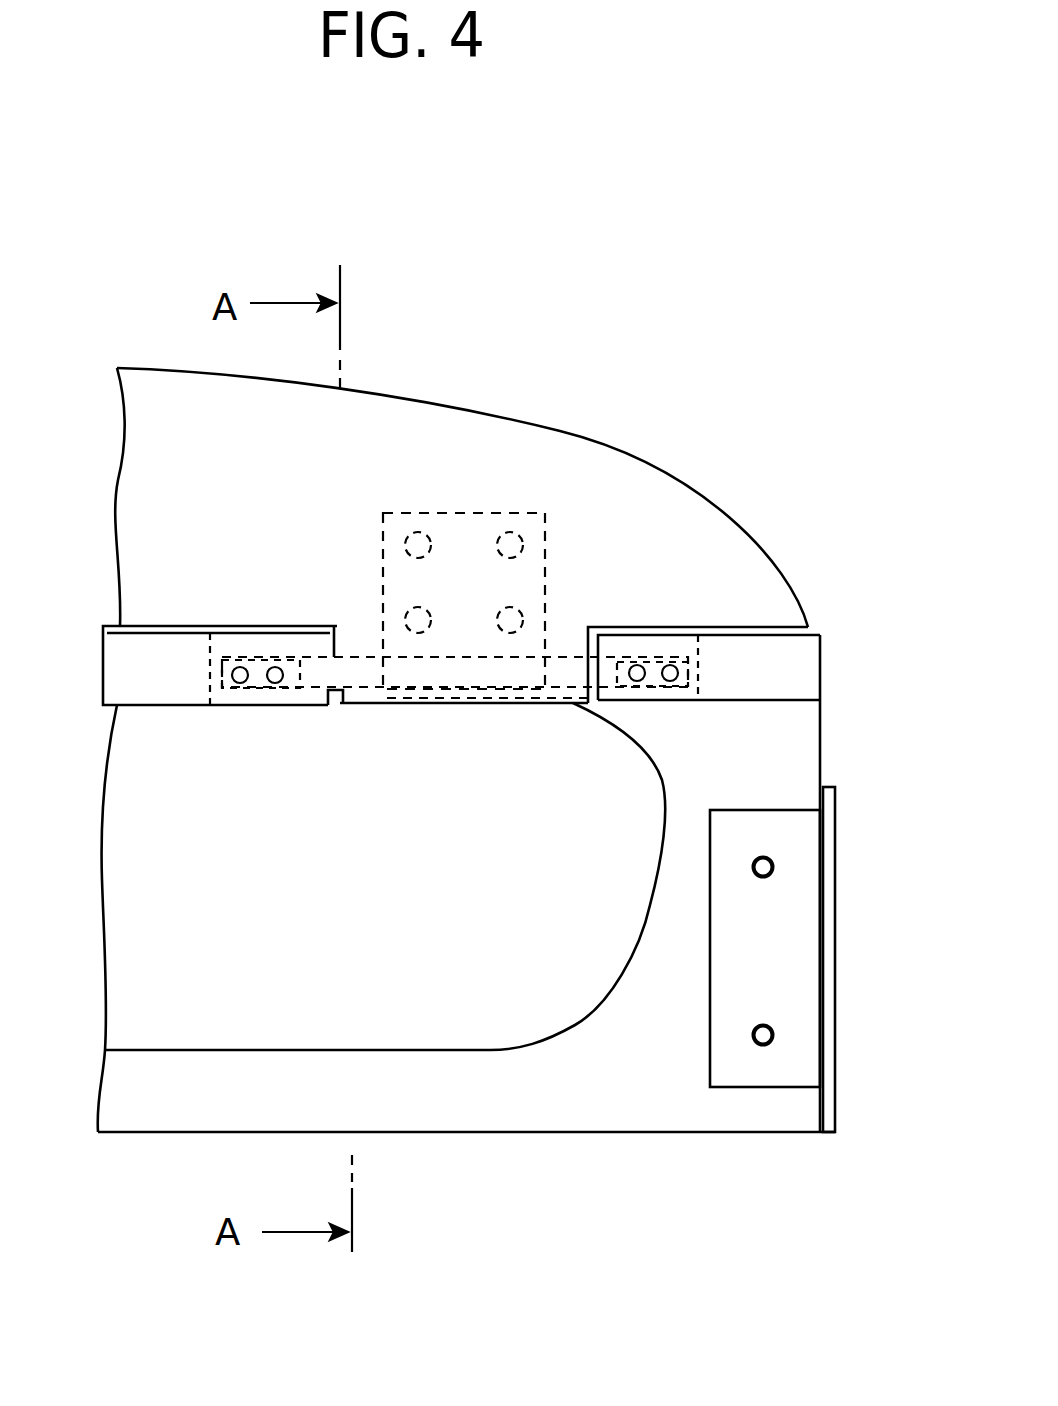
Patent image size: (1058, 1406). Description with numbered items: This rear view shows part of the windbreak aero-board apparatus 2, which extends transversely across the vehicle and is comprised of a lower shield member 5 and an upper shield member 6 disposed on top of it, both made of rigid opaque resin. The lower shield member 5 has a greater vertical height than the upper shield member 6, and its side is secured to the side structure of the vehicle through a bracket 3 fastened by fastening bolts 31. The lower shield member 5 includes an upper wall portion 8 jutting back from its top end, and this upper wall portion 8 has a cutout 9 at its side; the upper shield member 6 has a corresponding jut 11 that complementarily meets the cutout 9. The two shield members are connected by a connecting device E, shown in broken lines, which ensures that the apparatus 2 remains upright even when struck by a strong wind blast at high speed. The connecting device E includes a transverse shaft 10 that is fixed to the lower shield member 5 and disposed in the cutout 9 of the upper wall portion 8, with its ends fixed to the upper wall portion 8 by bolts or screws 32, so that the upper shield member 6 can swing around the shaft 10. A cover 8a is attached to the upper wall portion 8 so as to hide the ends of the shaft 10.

The windbreak aero-board apparatus 2 is at (804, 520).
The bracket 3 is at (803, 1078).
The lower shield member 5 is at (637, 1098).
The upper shield member 6 is at (507, 448).
The upper wall portion 8 is at (165, 697).
The cover 8a is at (240, 700).
The cutout 9 is at (338, 655).
The shaft 10 is at (698, 635).
The jut 11 is at (367, 692).
The fastening bolt 31 is at (775, 866).
The bolt or screw 32 is at (273, 666).
The connecting device E is at (430, 510).